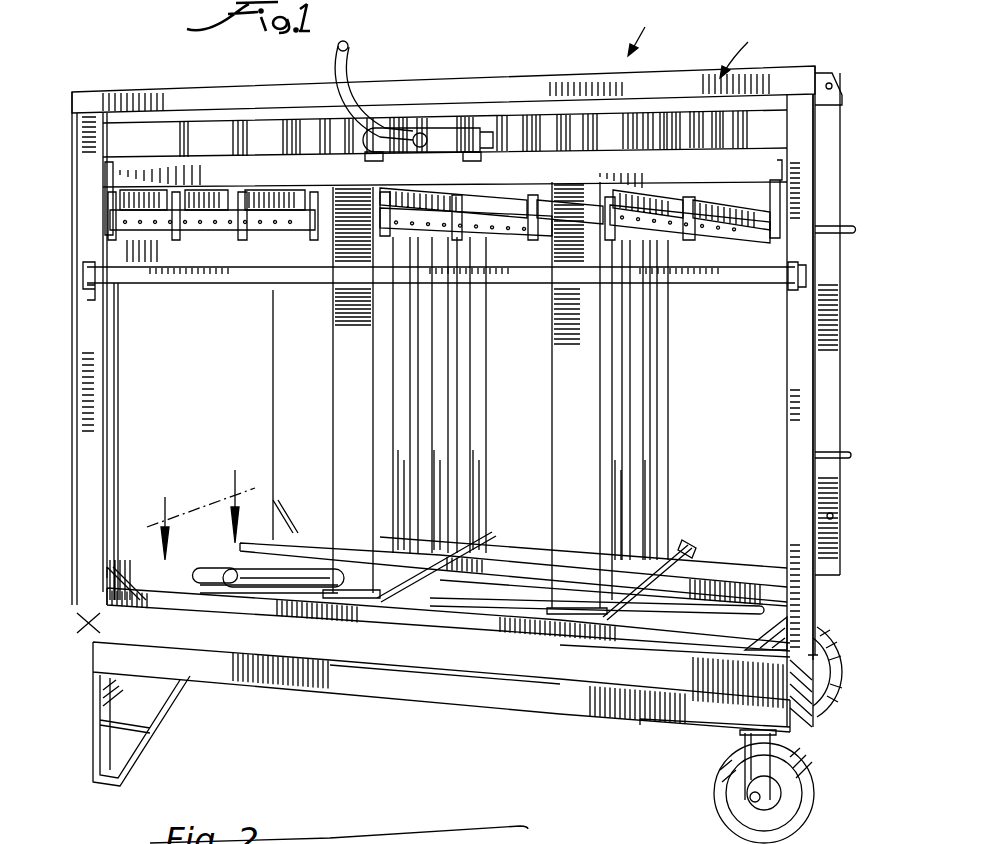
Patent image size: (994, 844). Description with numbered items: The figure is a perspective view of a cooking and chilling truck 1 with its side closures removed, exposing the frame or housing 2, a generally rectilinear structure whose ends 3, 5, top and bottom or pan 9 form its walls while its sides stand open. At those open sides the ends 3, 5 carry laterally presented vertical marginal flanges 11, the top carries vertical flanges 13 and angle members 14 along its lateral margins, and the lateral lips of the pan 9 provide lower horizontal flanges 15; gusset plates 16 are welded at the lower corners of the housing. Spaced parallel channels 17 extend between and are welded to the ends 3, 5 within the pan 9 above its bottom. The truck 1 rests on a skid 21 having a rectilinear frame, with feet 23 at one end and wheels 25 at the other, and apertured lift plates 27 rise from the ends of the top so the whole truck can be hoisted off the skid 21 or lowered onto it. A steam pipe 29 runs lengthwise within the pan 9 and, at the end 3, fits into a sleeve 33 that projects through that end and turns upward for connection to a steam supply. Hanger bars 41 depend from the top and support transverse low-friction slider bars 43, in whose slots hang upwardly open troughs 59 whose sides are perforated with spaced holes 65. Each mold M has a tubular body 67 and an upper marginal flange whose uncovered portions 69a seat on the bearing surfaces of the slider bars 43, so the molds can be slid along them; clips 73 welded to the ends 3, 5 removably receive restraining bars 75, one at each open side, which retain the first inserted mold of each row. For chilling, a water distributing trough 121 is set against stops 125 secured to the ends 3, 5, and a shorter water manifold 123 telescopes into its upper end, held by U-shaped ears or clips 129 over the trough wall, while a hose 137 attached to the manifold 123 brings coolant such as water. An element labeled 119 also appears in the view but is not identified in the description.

The cooking truck 1 is at (646, 30).
The frame or housing 2 is at (454, 290).
The end 3 is at (125, 330).
The end 5 is at (800, 438).
The bottom or pan 9 is at (775, 578).
The vertical marginal flanges 11 is at (70, 190).
The vertical flanges 13 is at (112, 92).
The angle members 14 is at (247, 117).
The lower horizontal flanges 15 is at (705, 557).
The gusset plates 16 is at (285, 520).
The channels 17 is at (495, 535).
The skid 21 is at (358, 685).
The feet 23 is at (160, 755).
The wheels 25 is at (825, 715).
The lift plates 27 is at (840, 92).
The steam pipe 29 is at (693, 620).
The sleeve 33 is at (218, 547).
The hanger bars 41 is at (190, 128).
The slider bars 43 is at (207, 193).
The troughs 59 is at (120, 214).
The holes 65 is at (495, 232).
The tubular body 67 is at (335, 400).
The marginal flange portions 69a is at (680, 545).
The clips 73 is at (90, 290).
The restraining bars 75 is at (200, 288).
The handle 119 is at (828, 455).
The water distributing trough 121 is at (757, 155).
The water manifold 123 is at (440, 140).
The stops 125 is at (107, 170).
The U-shaped ears or clips 129 is at (470, 160).
The hose 137 is at (345, 68).
The mold M is at (668, 390).